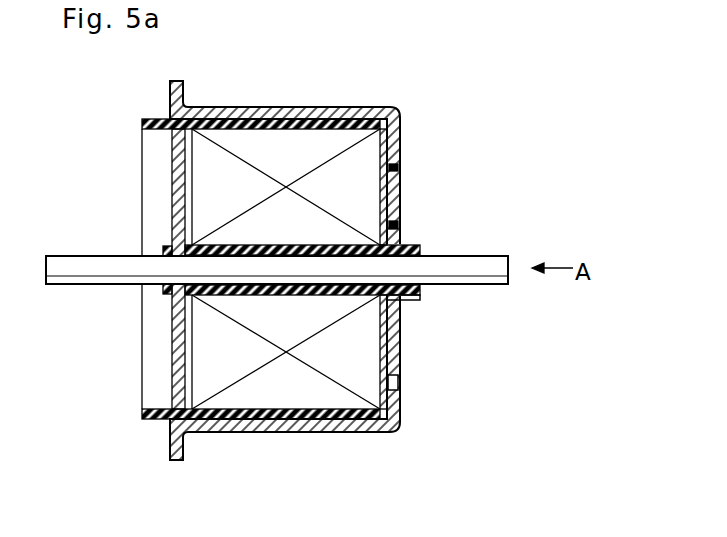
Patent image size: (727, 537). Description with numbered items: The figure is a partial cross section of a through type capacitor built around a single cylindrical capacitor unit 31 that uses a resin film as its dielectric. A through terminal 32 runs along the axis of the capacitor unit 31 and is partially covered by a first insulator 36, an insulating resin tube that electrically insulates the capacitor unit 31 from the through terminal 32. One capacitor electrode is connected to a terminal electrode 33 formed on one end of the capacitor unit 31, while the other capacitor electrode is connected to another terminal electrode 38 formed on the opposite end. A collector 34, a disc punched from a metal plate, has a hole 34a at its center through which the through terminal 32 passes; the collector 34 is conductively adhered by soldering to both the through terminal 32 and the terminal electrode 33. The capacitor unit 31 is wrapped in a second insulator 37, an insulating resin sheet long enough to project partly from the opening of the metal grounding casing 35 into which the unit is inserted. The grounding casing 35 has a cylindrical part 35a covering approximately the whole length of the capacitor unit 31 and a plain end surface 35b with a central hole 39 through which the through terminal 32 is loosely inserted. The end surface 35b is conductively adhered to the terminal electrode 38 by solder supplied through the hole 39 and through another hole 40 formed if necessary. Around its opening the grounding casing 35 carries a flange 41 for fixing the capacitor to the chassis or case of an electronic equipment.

The capacitor unit 31 is at (282, 402).
The through terminal 32 is at (482, 285).
The terminal electrode 33 is at (205, 412).
The collector 34 is at (170, 376).
The hole 34a is at (172, 258).
The grounding casing 35 is at (306, 104).
The cylindrical part 35a is at (323, 438).
The end surface 35b is at (402, 158).
The first insulator 36 is at (407, 298).
The second insulator 37 is at (143, 415).
The terminal electrode 38 is at (373, 382).
The hole 39 is at (402, 232).
The hole 40 is at (398, 385).
The flange 41 is at (167, 449).